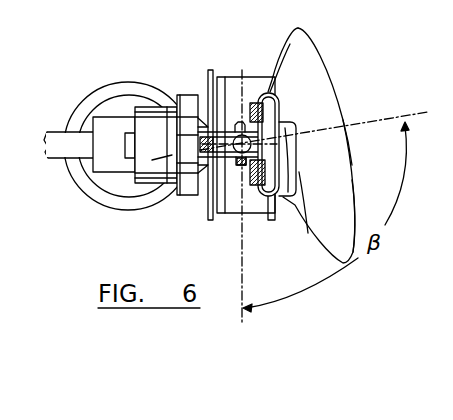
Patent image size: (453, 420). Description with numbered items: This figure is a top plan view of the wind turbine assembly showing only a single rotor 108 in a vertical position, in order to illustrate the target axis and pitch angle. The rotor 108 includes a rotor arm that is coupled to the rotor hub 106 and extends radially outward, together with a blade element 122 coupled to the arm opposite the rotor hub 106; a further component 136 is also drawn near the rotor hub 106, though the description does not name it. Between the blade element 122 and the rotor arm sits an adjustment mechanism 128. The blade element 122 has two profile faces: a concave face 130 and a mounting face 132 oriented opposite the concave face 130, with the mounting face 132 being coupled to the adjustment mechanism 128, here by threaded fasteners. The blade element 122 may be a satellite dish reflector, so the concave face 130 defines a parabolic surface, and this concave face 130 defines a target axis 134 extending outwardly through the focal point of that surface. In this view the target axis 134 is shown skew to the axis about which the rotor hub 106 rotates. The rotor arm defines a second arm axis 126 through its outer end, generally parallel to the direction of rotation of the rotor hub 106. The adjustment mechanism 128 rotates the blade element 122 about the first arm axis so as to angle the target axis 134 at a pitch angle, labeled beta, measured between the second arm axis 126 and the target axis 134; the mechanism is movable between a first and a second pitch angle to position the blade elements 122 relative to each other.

The rotor hub 106 is at (242, 77).
The rotor 108 is at (353, 75).
The blade element 122 is at (347, 152).
The second arm axis 126 is at (241, 252).
The adjustment mechanism 128 is at (306, 203).
The concave face 130 is at (322, 60).
The mounting face 132 is at (293, 60).
The target axis 134 is at (361, 120).
The flange coupling 136 is at (145, 110).